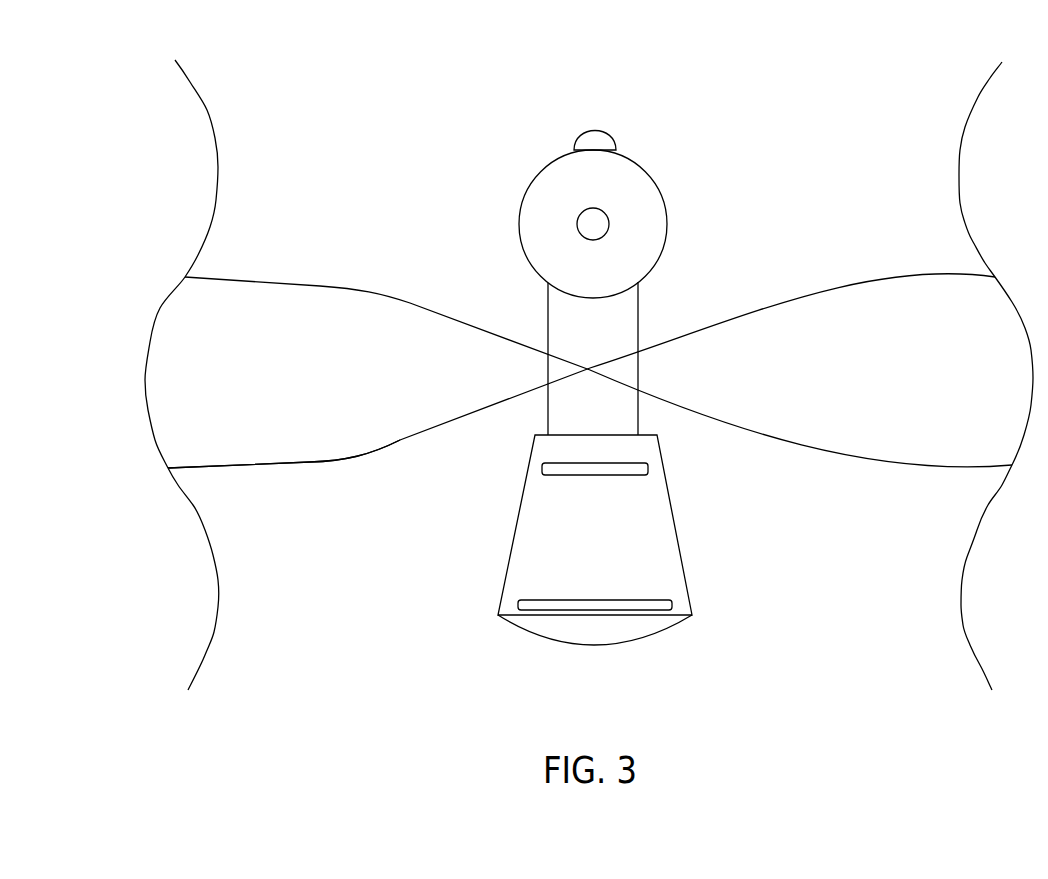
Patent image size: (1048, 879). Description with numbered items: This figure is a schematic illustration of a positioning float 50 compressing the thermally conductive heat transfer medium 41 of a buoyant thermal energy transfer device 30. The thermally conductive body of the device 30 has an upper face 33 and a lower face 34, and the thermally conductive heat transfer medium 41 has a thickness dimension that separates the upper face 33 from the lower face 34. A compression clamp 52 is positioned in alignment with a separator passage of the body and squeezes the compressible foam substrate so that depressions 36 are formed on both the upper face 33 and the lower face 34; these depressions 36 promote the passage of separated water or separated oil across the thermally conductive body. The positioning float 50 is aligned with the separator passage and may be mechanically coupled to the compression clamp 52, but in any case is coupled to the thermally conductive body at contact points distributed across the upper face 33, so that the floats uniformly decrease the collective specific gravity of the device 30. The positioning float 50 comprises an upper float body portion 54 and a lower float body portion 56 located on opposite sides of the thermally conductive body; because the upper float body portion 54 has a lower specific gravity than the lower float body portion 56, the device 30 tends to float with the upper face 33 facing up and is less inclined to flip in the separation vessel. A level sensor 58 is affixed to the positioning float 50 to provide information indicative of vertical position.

The buoyant thermal energy transfer device 30 is at (130, 362).
The upper face 33 is at (390, 295).
The lower face 34 is at (300, 466).
The thermally conductive heat transfer medium 41 is at (284, 452).
The depression 36 is at (528, 406).
The positioning float 50 is at (646, 406).
The compression clamp 52 is at (639, 331).
The upper float body portion 54 is at (667, 225).
The lower float body portion 56 is at (680, 555).
The level sensor 58 is at (608, 137).